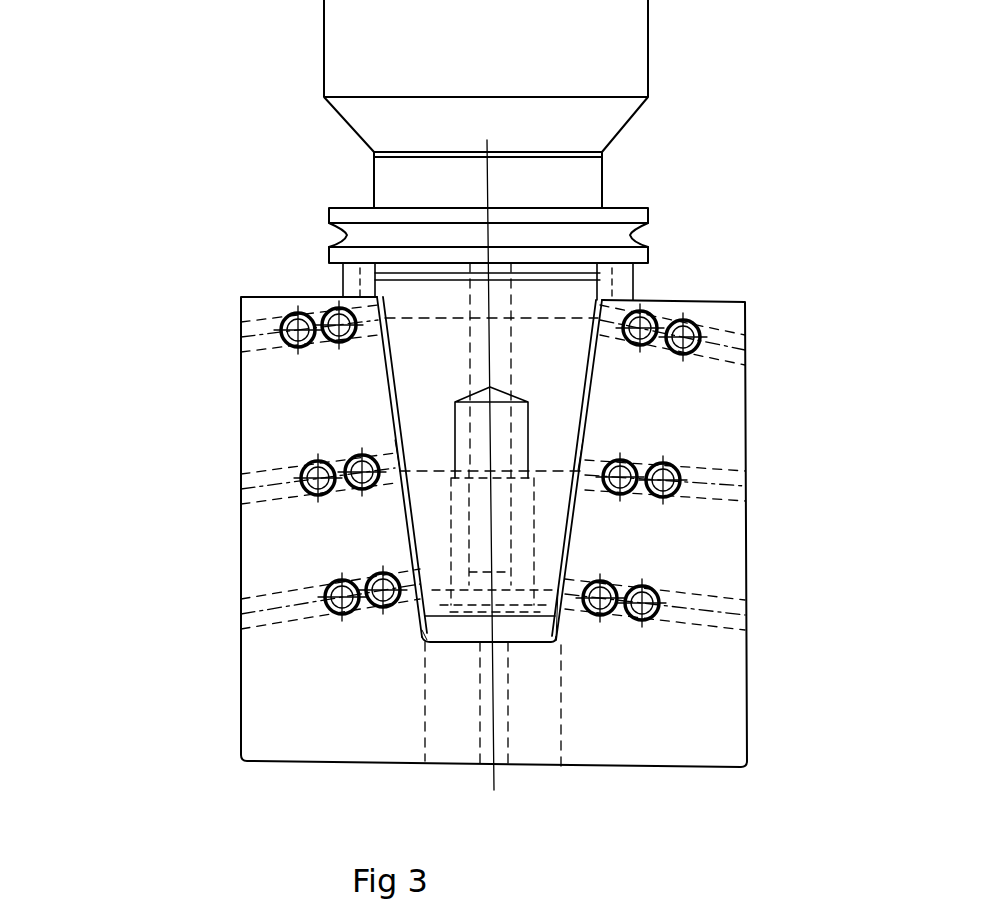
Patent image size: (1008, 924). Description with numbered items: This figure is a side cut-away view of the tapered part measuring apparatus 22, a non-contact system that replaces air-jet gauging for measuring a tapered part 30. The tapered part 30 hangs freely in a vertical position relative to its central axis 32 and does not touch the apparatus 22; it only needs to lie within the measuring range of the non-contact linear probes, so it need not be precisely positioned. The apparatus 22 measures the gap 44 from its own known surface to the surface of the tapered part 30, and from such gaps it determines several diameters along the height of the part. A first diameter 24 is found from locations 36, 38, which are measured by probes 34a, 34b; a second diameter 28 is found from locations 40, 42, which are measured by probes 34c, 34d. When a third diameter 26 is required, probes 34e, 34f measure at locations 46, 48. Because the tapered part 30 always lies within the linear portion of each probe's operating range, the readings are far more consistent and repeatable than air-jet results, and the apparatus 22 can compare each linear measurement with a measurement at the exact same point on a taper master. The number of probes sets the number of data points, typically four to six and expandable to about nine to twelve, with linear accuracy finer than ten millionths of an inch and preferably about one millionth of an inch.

The tapered part measuring apparatus 22 is at (833, 196).
The diameter 24 is at (435, 310).
The third diameter 26 is at (440, 468).
The diameter 28 is at (438, 590).
The tapered part 30 is at (578, 300).
The central axis 32 is at (492, 180).
The probe 34a is at (700, 325).
The probe 34b is at (285, 322).
The probe 34c is at (650, 595).
The probe 34d is at (330, 592).
The probe 34e is at (660, 470).
The probe 34f is at (305, 478).
The location 36 is at (605, 300).
The location 38 is at (365, 298).
The location 40 is at (562, 592).
The location 42 is at (423, 638).
The gap 44 is at (390, 403).
The location 46 is at (583, 463).
The location 48 is at (395, 457).